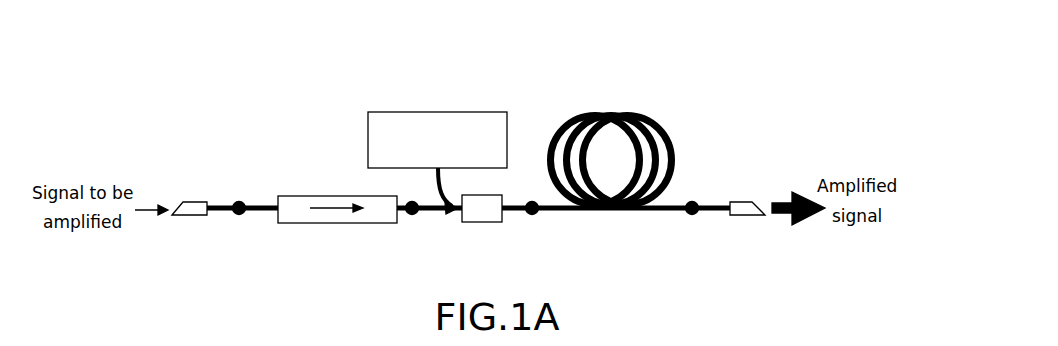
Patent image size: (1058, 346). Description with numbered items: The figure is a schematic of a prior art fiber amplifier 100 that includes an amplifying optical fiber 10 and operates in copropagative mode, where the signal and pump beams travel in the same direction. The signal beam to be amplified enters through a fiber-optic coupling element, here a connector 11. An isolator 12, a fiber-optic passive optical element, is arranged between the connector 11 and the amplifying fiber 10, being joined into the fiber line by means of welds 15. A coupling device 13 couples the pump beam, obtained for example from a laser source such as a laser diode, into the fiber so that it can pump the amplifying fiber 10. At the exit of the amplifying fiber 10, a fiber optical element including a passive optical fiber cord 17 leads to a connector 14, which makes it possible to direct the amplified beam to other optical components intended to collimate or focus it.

The amplifier 100 is at (198, 81).
The amplifying optical fiber 10 is at (662, 128).
The connector 11 is at (192, 216).
The isolator 12 is at (340, 223).
The coupling device 13 is at (480, 222).
The connector 14 is at (747, 216).
The welds 15 is at (413, 200).
The passive optical fiber cord 17 is at (713, 197).